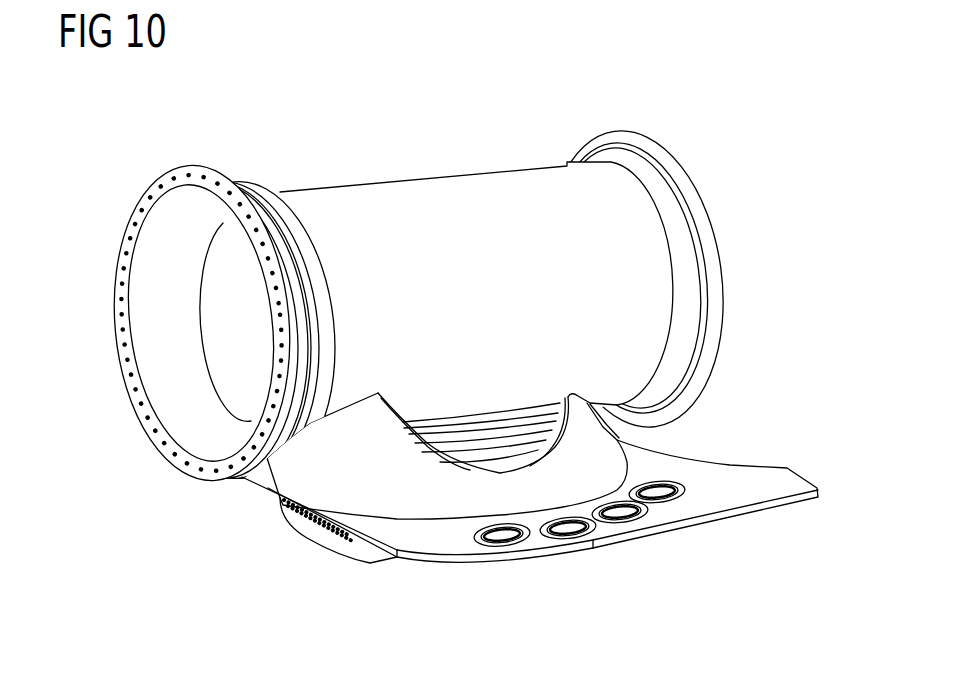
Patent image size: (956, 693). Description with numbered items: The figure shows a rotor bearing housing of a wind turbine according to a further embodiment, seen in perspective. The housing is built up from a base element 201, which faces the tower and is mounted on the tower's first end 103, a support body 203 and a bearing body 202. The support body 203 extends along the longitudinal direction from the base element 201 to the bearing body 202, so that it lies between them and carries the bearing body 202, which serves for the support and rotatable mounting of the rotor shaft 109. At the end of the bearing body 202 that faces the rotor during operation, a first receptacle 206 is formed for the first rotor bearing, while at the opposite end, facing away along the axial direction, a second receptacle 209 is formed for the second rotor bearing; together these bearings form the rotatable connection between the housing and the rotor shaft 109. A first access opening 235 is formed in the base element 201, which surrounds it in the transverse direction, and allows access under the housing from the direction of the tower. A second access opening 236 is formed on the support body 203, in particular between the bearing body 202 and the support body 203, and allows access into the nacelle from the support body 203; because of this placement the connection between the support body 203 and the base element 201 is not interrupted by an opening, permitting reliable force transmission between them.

The first end 103 is at (342, 545).
The rotor shaft 109 is at (137, 211).
The base element 201 is at (738, 476).
The bearing body 202 is at (431, 190).
The support body 203 is at (302, 473).
The first receptacle 206 is at (261, 158).
The second receptacle 209 is at (612, 118).
The first access opening 235 is at (497, 463).
The second access opening 236 is at (470, 447).